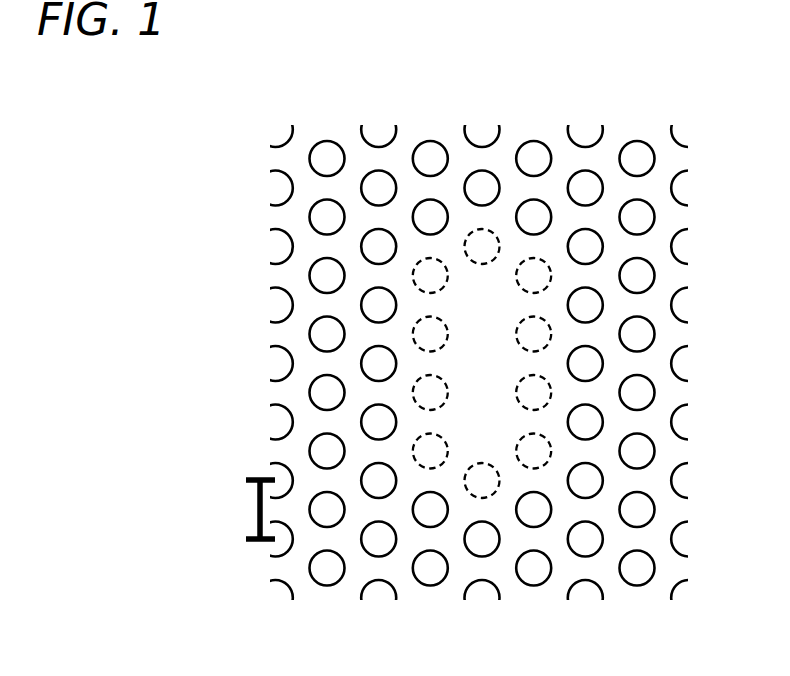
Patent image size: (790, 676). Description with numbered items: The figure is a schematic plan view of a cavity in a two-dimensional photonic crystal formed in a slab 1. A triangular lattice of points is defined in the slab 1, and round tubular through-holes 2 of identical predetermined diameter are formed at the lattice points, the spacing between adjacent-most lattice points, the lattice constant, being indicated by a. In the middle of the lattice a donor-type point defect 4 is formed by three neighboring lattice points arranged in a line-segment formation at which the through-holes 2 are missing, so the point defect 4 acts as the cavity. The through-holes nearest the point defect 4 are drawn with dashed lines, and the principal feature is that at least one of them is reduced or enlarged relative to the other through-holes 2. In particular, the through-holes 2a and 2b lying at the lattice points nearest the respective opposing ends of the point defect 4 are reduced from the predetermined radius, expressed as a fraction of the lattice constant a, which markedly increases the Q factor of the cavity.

The slab 1 is at (482, 345).
The through-holes 2 is at (538, 152).
The through-hole nearest one end of point defect 2a is at (480, 243).
The through-hole nearest other end of point defect 2b is at (481, 484).
The donor-type point defect 4 is at (478, 367).
The lattice constant a is at (248, 509).